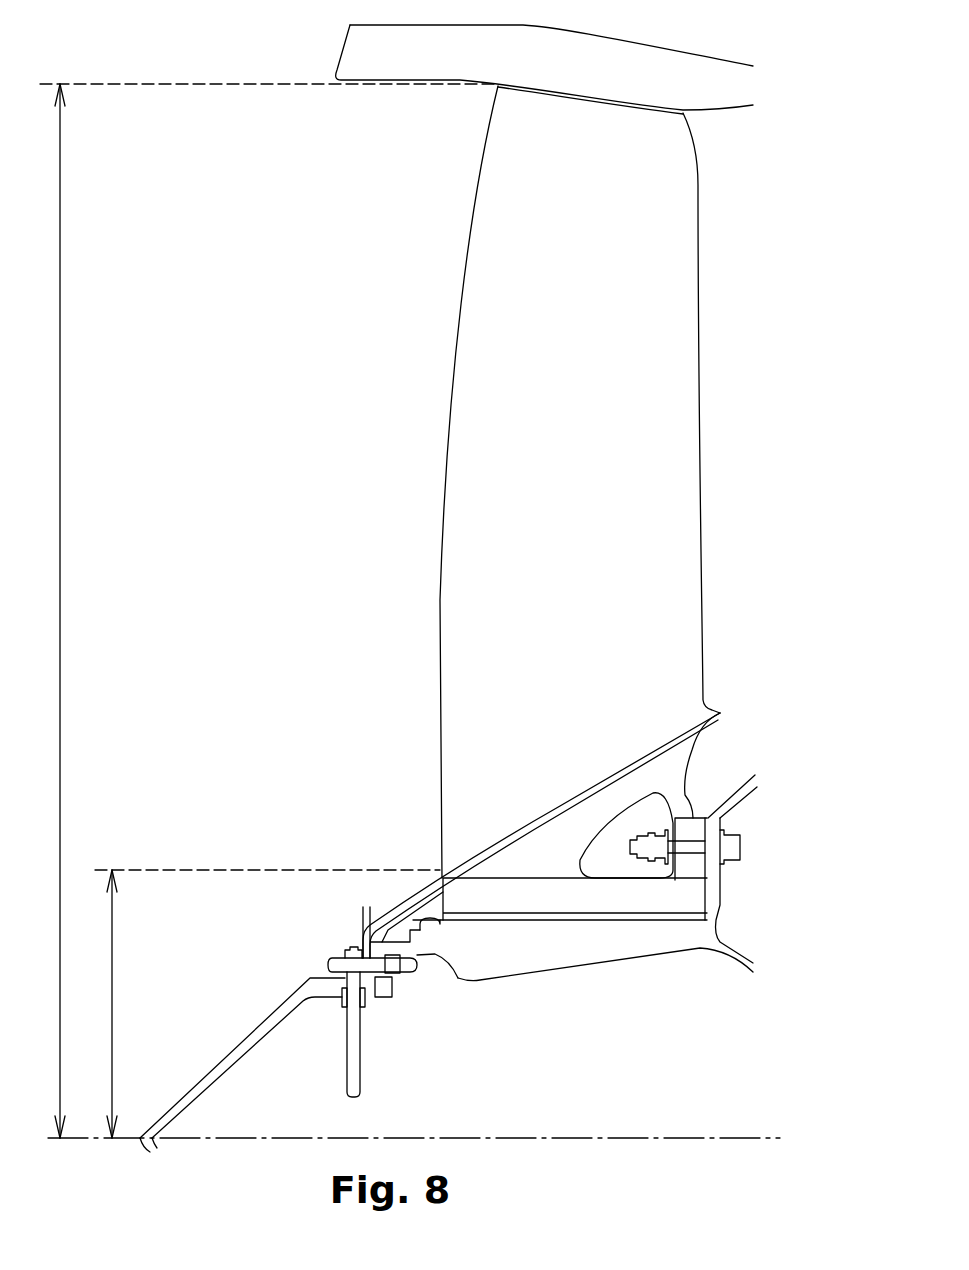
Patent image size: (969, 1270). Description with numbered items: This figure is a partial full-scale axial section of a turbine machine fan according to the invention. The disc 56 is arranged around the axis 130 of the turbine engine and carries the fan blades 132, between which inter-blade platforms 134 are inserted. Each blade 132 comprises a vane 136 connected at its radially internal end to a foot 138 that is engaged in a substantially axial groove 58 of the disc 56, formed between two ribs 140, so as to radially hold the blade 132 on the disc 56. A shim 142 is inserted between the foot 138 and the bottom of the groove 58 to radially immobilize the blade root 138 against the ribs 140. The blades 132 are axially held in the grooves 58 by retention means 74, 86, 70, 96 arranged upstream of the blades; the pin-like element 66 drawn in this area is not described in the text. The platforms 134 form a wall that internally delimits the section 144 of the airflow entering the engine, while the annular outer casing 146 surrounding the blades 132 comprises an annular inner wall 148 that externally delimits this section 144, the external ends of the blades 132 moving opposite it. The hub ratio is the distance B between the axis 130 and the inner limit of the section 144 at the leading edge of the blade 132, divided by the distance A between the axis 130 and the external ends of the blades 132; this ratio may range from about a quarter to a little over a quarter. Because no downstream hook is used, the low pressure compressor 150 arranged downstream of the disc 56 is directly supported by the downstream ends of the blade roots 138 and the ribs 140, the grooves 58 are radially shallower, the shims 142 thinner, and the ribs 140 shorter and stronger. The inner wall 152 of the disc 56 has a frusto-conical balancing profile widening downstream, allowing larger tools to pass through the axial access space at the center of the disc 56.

The annular outer casing 146 is at (422, 53).
The annular inner wall 148 is at (458, 80).
The vane 136 is at (520, 393).
The fan blade 132 is at (618, 508).
The inter-blade platform 134 is at (667, 770).
The foot 138 is at (568, 890).
The rib 140 is at (507, 883).
The axial retention means 74 is at (408, 918).
The axial retention means 86 is at (372, 942).
The axial retention means 70 is at (322, 966).
The pin 66 is at (378, 983).
The axial retention means 96 is at (258, 1017).
The inner wall of the disc 152 is at (497, 977).
The disc 56 is at (532, 953).
The groove 58 is at (612, 923).
The shim 142 is at (707, 905).
The low pressure compressor 150 is at (748, 788).
The axis of the turbine engine 130 is at (648, 1134).
The distance A is at (62, 612).
The distance B is at (113, 1003).
The section of the airflow 144 is at (292, 571).